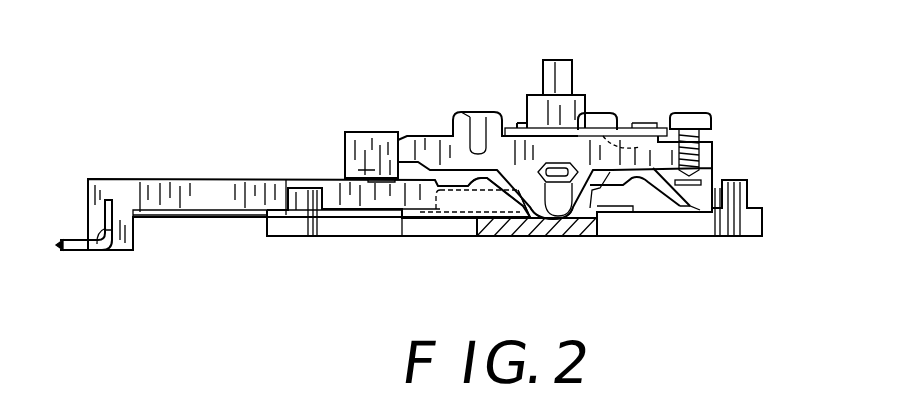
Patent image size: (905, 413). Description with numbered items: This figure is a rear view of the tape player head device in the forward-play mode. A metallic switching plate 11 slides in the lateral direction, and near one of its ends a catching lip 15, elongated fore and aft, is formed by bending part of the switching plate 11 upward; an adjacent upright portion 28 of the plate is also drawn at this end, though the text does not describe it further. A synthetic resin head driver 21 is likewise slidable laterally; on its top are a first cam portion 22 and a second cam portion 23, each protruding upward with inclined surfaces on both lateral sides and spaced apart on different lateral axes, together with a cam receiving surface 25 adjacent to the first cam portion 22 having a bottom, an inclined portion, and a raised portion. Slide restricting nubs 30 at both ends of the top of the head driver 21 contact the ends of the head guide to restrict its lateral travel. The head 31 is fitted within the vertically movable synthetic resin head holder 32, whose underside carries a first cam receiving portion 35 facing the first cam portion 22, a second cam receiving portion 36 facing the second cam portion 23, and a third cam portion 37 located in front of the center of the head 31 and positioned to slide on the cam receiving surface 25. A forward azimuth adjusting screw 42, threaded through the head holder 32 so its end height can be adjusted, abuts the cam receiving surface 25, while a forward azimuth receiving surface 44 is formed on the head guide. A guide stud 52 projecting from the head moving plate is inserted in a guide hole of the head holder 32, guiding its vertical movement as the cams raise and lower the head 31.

The switching plate 11 is at (70, 252).
The catching lip 15 is at (106, 236).
The head driver 21 is at (160, 186).
The first cam portion 22 is at (485, 183).
The second cam portion 23 is at (633, 190).
The cam receiving surface 25 is at (490, 194).
The upright portion 28 is at (104, 205).
The slide restricting nubs 30 is at (302, 200).
The head 31 is at (597, 125).
The head holder 32 is at (657, 128).
The first cam receiving portion 35 is at (516, 200).
The second cam receiving portion 36 is at (697, 204).
The third cam portion 37 is at (562, 216).
The forward azimuth adjusting screw 42 is at (697, 110).
The forward azimuth receiving surface 44 is at (713, 163).
The guide stud 52 is at (558, 78).